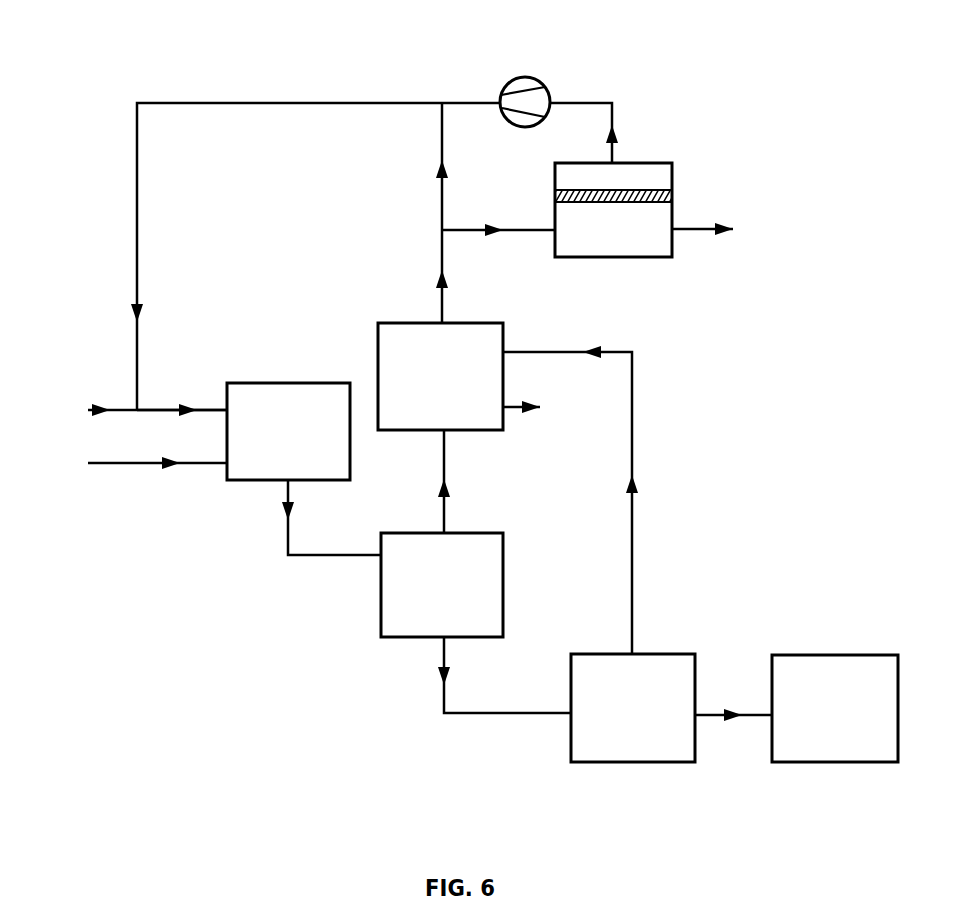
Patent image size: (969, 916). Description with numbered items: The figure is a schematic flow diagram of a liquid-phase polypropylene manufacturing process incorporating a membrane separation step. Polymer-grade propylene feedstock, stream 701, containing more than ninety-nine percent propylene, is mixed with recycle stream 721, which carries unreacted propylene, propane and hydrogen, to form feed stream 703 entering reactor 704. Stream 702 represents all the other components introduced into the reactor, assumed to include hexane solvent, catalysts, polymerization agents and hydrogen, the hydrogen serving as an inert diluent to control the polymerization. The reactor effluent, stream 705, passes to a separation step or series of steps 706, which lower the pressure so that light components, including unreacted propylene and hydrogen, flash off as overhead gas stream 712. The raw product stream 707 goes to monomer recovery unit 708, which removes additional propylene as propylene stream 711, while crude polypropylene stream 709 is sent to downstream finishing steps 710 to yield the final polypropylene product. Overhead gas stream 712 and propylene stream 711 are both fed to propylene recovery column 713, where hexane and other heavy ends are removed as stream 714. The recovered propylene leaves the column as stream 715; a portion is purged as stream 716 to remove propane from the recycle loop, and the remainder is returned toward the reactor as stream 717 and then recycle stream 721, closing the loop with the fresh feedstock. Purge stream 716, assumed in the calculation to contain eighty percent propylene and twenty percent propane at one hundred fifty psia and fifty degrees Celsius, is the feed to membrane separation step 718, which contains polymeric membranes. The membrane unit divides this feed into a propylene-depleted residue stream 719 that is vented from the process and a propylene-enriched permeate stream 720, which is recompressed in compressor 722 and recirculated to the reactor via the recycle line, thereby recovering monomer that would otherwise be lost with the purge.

The polymer-grade propylene feedstock stream 701 is at (135, 411).
The other components stream 702 is at (135, 464).
The feed stream 703 is at (182, 399).
The reactor 704 is at (246, 481).
The reactor effluent stream 705 is at (331, 517).
The separation step 706 is at (390, 637).
The raw product stream 707 is at (504, 675).
The monomer recovery unit 708 is at (688, 654).
The crude polypropylene stream 709 is at (733, 702).
The downstream finishing steps 710 is at (816, 655).
The propylene stream 711 is at (593, 500).
The overhead gas stream 712 is at (422, 481).
The propylene recovery column 713 is at (378, 340).
The heavy ends stream 714 is at (542, 408).
The recovered propylene stream 715 is at (421, 276).
The purge stream 716 is at (498, 219).
The recycled propylene stream 717 is at (420, 166).
The membrane separation step 718 is at (618, 258).
The propylene-depleted residue stream 719 is at (723, 230).
The propylene-enriched permeate stream 720 is at (606, 133).
The recycle stream 721 is at (315, 243).
The compressor 722 is at (535, 78).